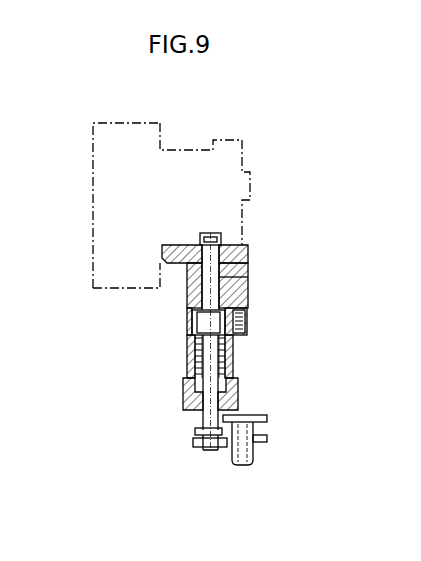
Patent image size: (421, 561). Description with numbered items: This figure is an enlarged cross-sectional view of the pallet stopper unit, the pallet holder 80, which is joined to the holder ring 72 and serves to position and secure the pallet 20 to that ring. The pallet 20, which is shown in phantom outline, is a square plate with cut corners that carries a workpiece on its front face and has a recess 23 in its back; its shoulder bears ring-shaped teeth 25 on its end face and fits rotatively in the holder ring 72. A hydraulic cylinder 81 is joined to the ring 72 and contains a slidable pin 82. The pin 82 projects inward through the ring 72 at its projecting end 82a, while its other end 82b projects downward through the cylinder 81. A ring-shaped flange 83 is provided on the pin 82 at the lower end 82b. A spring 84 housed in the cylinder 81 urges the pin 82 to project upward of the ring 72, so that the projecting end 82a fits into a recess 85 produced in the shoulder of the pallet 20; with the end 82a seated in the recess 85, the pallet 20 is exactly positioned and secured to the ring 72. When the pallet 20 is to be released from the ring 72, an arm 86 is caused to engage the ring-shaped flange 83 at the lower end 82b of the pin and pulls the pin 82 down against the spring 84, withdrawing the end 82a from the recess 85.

The pallet 20 is at (93, 200).
The recess 23 is at (197, 150).
The ring-shaped teeth 25 is at (250, 180).
The holder ring 72 is at (248, 257).
The pallet holder 80 is at (180, 342).
The hydraulic cylinder 81 is at (231, 360).
The slidable pin 82 is at (248, 285).
The projecting end 82a is at (221, 235).
The other end 82b is at (205, 447).
The ring-shaped flange 83 is at (195, 430).
The spring 84 is at (233, 370).
The recess 85 is at (208, 233).
The arm 86 is at (253, 452).